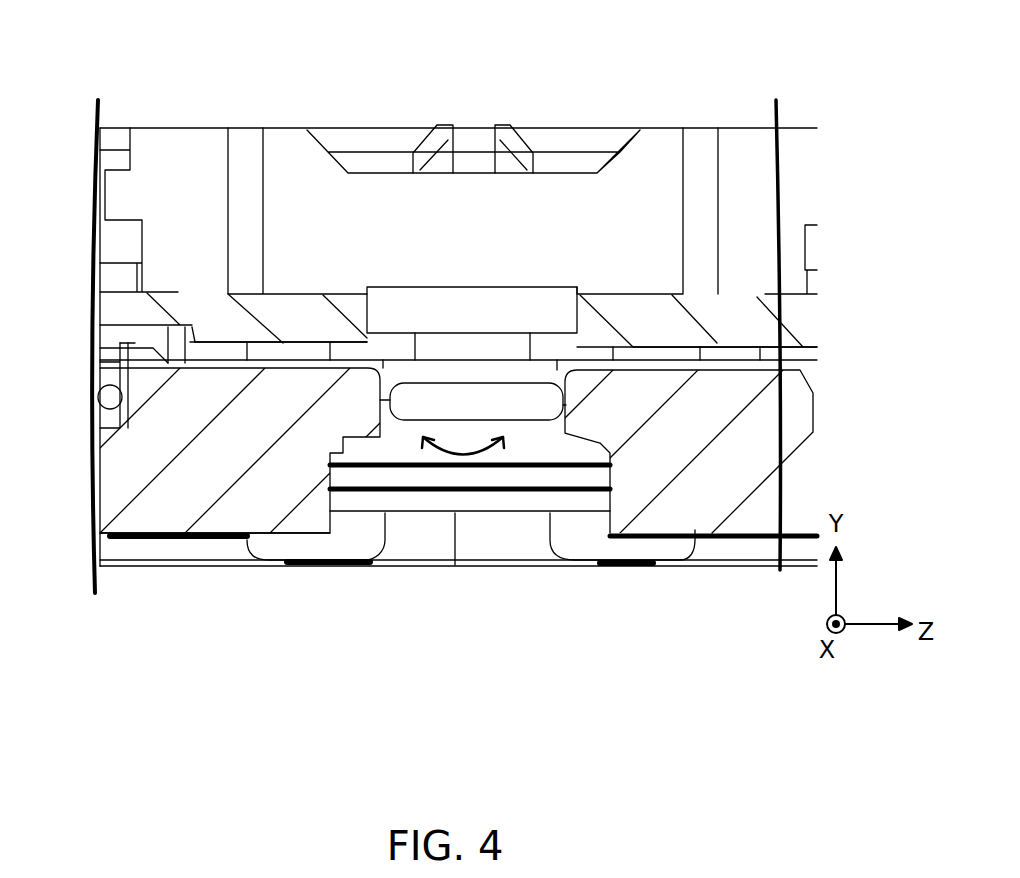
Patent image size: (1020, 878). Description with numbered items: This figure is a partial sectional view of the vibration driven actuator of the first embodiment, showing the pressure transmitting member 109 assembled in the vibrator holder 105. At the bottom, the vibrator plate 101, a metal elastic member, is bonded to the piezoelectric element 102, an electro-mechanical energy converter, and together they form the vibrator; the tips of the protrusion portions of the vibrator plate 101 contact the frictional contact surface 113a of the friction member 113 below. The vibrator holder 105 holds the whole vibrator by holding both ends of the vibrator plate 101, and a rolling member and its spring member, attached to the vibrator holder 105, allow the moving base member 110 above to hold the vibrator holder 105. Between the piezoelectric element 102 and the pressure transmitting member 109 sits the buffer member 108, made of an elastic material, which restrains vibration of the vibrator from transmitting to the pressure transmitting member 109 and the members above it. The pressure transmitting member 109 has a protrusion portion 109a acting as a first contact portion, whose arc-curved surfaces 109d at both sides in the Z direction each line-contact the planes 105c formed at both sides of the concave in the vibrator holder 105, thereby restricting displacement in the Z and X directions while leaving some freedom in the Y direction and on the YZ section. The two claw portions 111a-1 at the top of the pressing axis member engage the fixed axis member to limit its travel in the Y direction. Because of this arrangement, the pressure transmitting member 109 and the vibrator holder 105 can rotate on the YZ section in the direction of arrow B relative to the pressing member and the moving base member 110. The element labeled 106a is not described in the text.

The moving base member 110 is at (263, 153).
The claw portions 111a-1 is at (515, 150).
The pressure transmitting member 109 is at (467, 373).
The protrusion portion 109a is at (507, 405).
The arc-curved surfaces 109d is at (380, 400).
The spring / ring member 106a is at (110, 403).
The vibrator holder 105 is at (693, 517).
The planes 105c is at (380, 537).
The vibrator plate 101 is at (377, 540).
The piezoelectric element 102 is at (432, 480).
The buffer member 108 is at (522, 460).
The friction member 113 is at (195, 580).
The frictional contact surface 113a is at (137, 553).
The arrow B is at (468, 440).